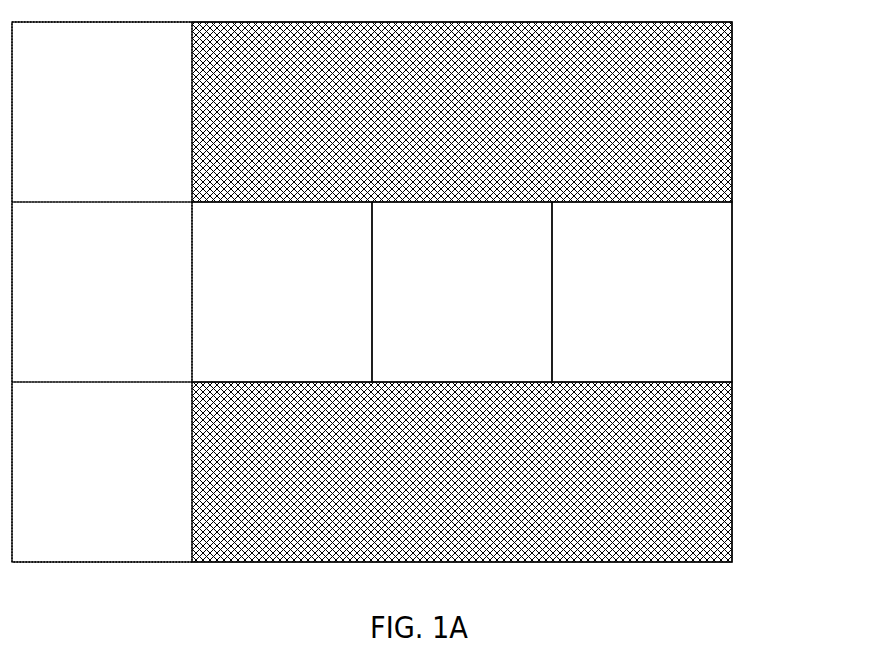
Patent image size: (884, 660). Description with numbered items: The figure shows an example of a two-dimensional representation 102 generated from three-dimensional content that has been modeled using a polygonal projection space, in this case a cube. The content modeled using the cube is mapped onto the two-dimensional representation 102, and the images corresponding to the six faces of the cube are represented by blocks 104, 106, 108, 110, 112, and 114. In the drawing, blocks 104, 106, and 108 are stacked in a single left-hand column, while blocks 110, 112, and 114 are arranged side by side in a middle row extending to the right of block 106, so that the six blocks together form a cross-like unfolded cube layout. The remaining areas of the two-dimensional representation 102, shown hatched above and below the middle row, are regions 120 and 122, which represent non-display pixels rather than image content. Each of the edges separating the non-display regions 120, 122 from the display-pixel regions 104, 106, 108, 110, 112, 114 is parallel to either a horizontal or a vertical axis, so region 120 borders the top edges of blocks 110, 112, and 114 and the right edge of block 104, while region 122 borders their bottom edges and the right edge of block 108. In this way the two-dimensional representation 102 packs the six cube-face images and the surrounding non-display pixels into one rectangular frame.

The 2D representation 102 is at (770, 52).
The block 104 is at (123, 122).
The block 106 is at (123, 302).
The block 108 is at (123, 482).
The block 110 is at (303, 302).
The block 112 is at (483, 302).
The block 114 is at (663, 302).
The region 120 is at (733, 133).
The region 122 is at (733, 448).